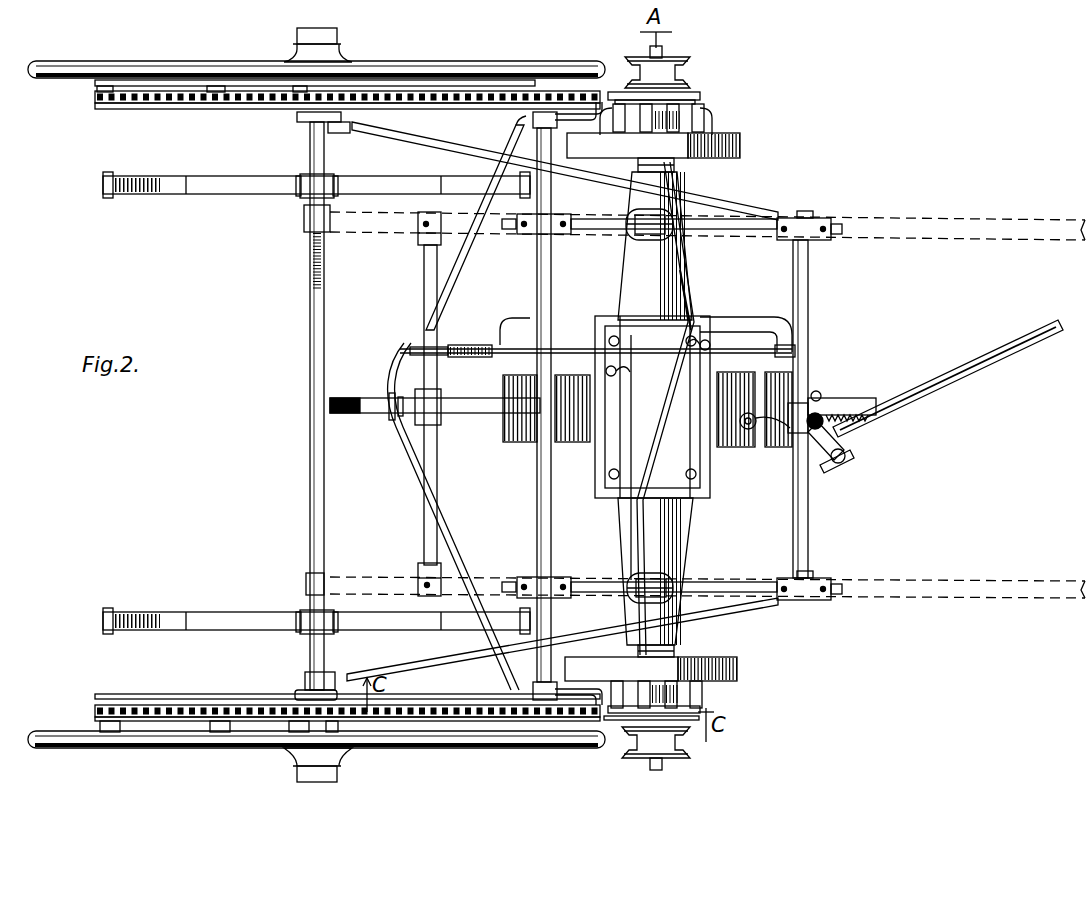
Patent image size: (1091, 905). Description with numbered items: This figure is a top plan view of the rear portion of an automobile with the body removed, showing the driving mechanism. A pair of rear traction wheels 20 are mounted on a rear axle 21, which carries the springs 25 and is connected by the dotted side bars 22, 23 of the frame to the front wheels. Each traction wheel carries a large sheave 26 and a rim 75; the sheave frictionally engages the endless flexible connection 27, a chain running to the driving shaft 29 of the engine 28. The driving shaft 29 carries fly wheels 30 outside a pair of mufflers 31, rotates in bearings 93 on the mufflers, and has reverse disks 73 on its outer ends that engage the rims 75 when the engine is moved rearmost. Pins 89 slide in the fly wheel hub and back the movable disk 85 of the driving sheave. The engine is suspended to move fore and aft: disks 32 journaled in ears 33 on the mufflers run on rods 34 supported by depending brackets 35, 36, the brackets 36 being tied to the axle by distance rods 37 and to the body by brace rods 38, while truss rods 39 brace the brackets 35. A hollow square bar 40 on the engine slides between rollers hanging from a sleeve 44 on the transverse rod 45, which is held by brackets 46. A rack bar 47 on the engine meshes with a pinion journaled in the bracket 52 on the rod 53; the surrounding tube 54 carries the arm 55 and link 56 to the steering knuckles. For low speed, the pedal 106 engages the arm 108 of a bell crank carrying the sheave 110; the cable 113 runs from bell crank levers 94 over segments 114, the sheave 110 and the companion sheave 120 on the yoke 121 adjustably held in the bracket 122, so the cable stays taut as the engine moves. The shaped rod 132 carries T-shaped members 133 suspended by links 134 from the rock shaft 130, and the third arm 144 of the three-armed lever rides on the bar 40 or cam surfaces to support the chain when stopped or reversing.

The rear traction wheels 20 is at (469, 70).
The rim 75 is at (577, 70).
The sheaves 26 is at (202, 706).
The endless flexible connection 27 is at (200, 102).
The rear axle 21 is at (325, 333).
The springs 25 is at (258, 180).
The side bar 22 is at (928, 228).
The side bar 23 is at (918, 586).
The rod or tube 45 is at (425, 290).
The brackets 46 is at (424, 226).
The rock shaft 130 is at (552, 538).
The links 134 is at (565, 128).
The distance rods 37 is at (452, 153).
The rod 132 is at (458, 270).
The truss rods 39 is at (506, 228).
The brackets 35 is at (528, 234).
The rods 34 is at (725, 219).
The brackets 36 is at (815, 218).
The brace rods 38 is at (836, 234).
The rod or tube 53 is at (808, 295).
The driving shaft 29 is at (665, 50).
The reverse disks 73 is at (688, 80).
The pins 89 is at (690, 112).
The disk 85 is at (617, 720).
The T-shaped members 133 is at (626, 407).
The fly wheels 30 is at (732, 133).
The bell crank levers 94 is at (674, 165).
The bearings 93 is at (672, 654).
The mufflers 31 is at (632, 272).
The disks 32 is at (630, 226).
The ears 33 is at (690, 240).
The cable 113 is at (697, 322).
The engine 28 is at (577, 443).
The segments 114 is at (708, 338).
The sheave 110 is at (795, 340).
The arm 108 is at (805, 395).
The bracket 122 is at (405, 351).
The yoke 121 is at (468, 338).
The companion sheave 120 is at (482, 358).
The bar 40 is at (477, 413).
The sleeve 44 is at (436, 426).
The third arm 144 is at (392, 413).
The rack bar 47 is at (843, 404).
The link 56 is at (975, 370).
The bracket 52 is at (797, 428).
The arm 55 is at (860, 440).
The tube 54 is at (828, 466).
The pedal 106 is at (748, 430).